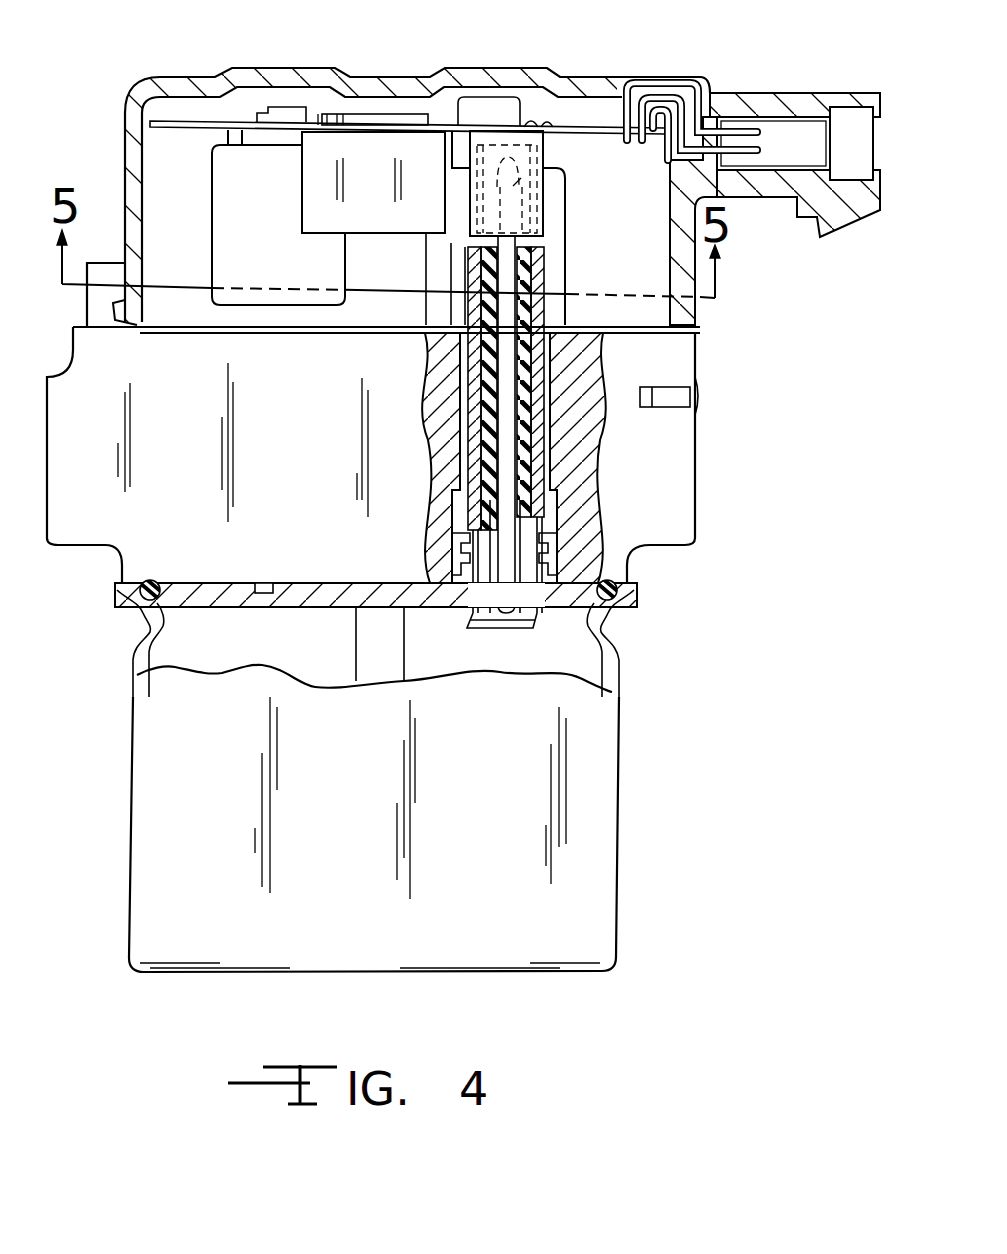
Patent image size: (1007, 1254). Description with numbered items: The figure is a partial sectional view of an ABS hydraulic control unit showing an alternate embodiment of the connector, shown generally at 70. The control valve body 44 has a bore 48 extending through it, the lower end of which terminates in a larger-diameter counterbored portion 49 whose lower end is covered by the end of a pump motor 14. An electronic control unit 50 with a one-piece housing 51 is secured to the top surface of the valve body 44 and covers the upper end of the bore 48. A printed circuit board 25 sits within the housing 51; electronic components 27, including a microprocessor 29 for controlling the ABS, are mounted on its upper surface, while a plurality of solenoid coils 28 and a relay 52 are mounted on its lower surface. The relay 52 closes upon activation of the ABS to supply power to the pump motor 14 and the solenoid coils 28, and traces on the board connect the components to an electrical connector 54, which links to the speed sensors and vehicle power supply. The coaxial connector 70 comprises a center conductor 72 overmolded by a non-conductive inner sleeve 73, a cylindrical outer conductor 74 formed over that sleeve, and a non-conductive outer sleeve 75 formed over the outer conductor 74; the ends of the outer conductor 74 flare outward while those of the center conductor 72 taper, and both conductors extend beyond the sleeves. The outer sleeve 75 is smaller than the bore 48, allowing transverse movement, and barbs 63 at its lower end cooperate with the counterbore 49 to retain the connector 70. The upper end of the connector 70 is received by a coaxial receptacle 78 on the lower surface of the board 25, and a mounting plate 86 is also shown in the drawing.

The pump motor 14 is at (601, 766).
The printed circuit board 25 is at (188, 130).
The electronic components 27 is at (280, 108).
The solenoid coils 28 is at (275, 235).
The microprocessor 29 is at (383, 112).
The control valve body 44 is at (697, 427).
The bore 48 is at (460, 397).
The counterbored portion 49 is at (453, 531).
The electronic control unit 50 is at (130, 77).
The housing 51 is at (124, 155).
The relay 52 is at (385, 191).
The electrical connector 54 is at (876, 91).
The barbs 63 is at (553, 497).
The coaxial connector 70 is at (578, 219).
The center conductor 72 is at (537, 166).
The inner sleeve 73 is at (524, 268).
The outer conductor 74 is at (476, 270).
The outer sleeve 75 is at (542, 290).
The coaxial receptacle 78 is at (537, 143).
The mounting plate 86 is at (222, 600).